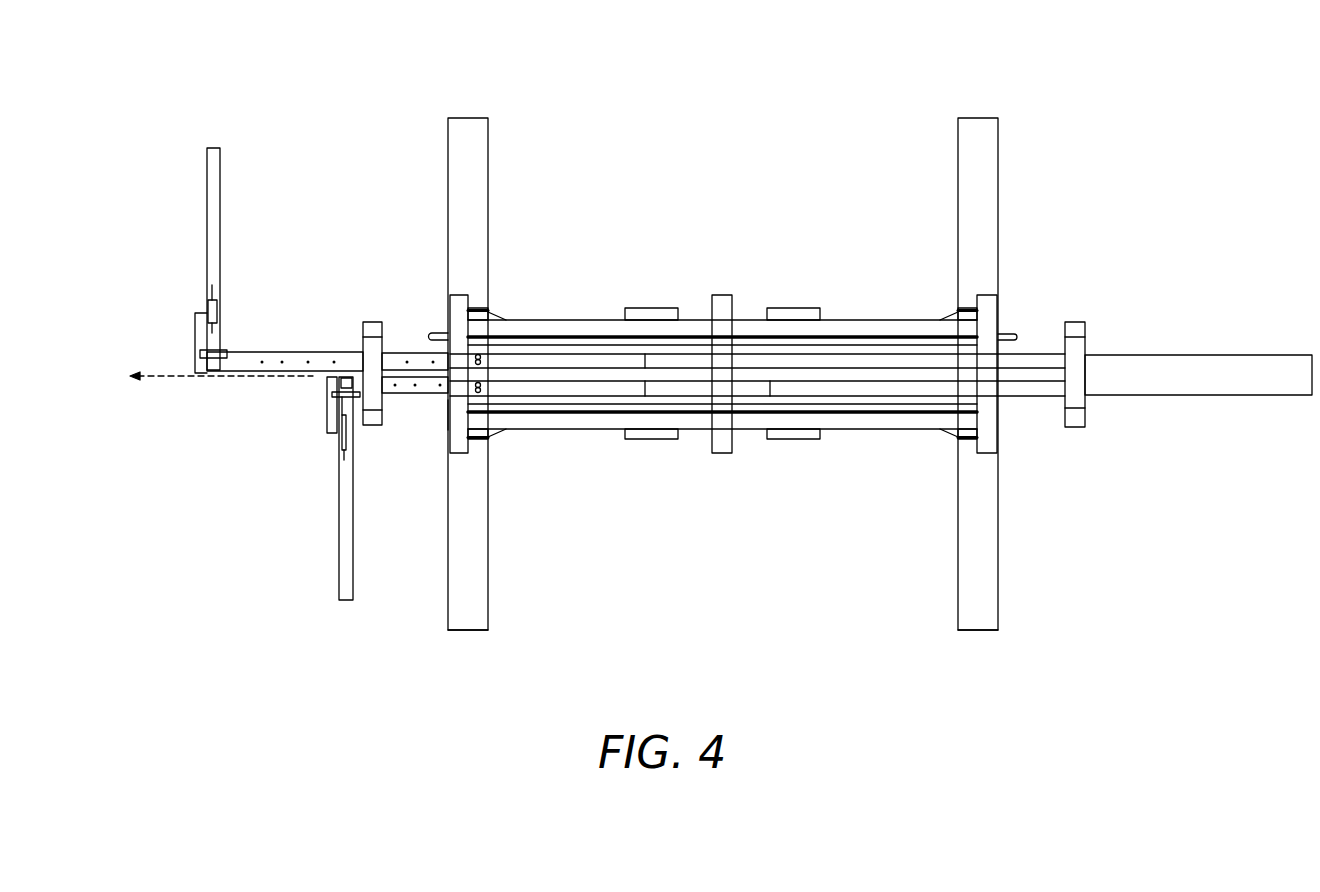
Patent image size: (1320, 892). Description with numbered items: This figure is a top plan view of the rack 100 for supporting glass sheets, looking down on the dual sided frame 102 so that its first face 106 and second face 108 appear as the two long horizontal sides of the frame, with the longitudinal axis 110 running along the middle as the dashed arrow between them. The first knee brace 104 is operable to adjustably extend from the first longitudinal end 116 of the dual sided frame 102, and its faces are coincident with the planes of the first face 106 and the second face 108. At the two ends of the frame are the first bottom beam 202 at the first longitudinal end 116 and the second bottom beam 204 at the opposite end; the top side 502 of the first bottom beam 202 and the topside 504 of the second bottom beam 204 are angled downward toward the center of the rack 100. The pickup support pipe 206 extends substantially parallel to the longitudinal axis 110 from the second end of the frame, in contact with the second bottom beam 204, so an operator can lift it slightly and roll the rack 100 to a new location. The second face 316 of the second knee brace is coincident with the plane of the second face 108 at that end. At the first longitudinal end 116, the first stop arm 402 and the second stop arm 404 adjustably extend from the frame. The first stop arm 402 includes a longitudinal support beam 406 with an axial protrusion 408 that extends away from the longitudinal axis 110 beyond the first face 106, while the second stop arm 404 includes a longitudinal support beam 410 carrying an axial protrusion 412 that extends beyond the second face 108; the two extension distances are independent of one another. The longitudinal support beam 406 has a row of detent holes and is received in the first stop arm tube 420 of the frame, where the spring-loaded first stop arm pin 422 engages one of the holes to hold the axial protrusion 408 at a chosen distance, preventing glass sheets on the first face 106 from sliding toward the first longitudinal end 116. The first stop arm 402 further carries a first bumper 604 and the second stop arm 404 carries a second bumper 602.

The rack 100 is at (1172, 112).
The dual sided frame 102 is at (720, 362).
The first knee brace 104 is at (372, 350).
The first face 106 is at (863, 430).
The second face 108 is at (863, 318).
The longitudinal axis 110 is at (183, 376).
The first longitudinal end 116 is at (448, 415).
The first bottom beam 202 is at (467, 632).
The second bottom beam 204 is at (977, 632).
The pickup support pipe 206 is at (1173, 354).
The second face of the second knee brace 316 is at (1074, 350).
The first stop arm 402 is at (335, 438).
The second stop arm 404 is at (225, 342).
The longitudinal support beam 406 is at (403, 397).
The axial protrusion 408 is at (345, 601).
The longitudinal support beam 410 is at (313, 352).
The axial protrusion 412 is at (213, 148).
The first stop arm tube 420 is at (526, 388).
The spring-loaded first stop arm pin 422 is at (481, 388).
The top side of the first bottom beam 502 is at (467, 565).
The topside of the second bottom beam 504 is at (977, 565).
The second bumper 602 is at (193, 343).
The first bumper 604 is at (333, 411).